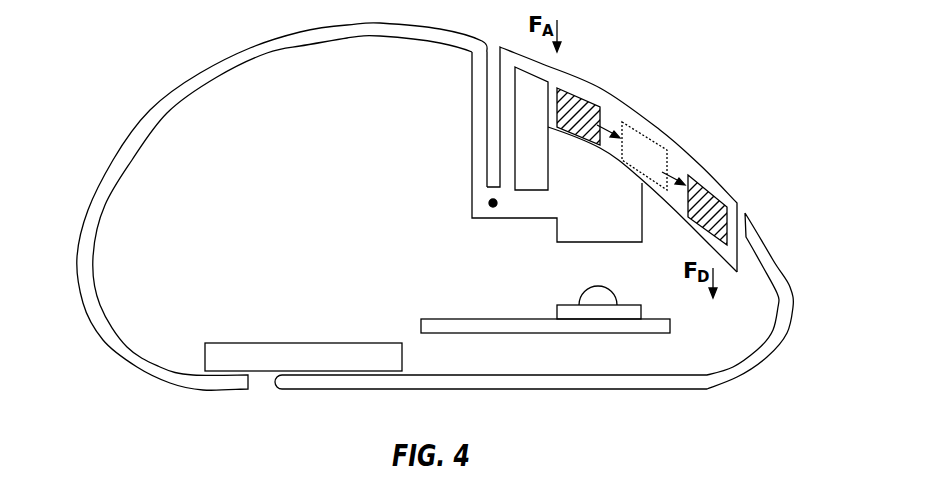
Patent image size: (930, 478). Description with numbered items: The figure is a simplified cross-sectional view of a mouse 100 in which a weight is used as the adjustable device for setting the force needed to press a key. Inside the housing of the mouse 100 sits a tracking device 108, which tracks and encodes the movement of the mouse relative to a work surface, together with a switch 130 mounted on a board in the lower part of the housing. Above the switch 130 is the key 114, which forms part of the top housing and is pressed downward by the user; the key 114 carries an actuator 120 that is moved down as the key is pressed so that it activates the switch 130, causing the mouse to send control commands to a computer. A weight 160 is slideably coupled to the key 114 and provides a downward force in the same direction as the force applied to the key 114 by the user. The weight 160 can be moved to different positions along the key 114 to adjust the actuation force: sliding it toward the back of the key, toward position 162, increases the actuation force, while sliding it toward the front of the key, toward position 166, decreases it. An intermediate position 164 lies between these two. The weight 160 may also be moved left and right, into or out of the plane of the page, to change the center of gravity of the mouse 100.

The mouse 100 is at (115, 66).
The tracking device 108 is at (323, 343).
The key 114 is at (673, 210).
The actuator 120 is at (567, 242).
The switch 130 is at (596, 283).
The weight 160 is at (773, 124).
The position 162 is at (578, 97).
The second actuator region 164 is at (643, 135).
The position 166 is at (710, 195).